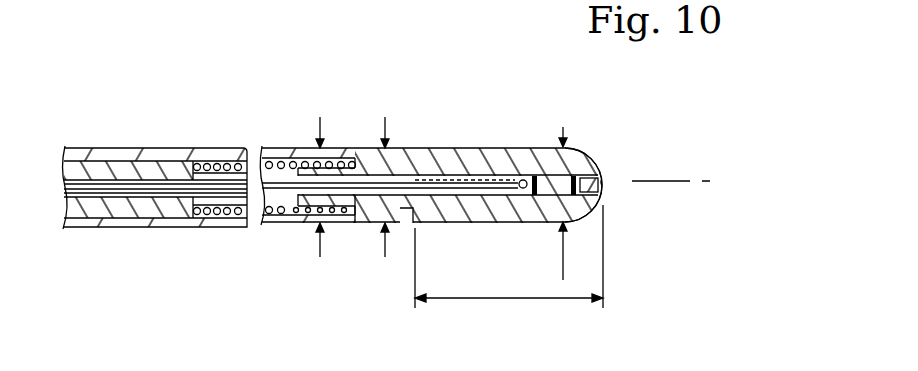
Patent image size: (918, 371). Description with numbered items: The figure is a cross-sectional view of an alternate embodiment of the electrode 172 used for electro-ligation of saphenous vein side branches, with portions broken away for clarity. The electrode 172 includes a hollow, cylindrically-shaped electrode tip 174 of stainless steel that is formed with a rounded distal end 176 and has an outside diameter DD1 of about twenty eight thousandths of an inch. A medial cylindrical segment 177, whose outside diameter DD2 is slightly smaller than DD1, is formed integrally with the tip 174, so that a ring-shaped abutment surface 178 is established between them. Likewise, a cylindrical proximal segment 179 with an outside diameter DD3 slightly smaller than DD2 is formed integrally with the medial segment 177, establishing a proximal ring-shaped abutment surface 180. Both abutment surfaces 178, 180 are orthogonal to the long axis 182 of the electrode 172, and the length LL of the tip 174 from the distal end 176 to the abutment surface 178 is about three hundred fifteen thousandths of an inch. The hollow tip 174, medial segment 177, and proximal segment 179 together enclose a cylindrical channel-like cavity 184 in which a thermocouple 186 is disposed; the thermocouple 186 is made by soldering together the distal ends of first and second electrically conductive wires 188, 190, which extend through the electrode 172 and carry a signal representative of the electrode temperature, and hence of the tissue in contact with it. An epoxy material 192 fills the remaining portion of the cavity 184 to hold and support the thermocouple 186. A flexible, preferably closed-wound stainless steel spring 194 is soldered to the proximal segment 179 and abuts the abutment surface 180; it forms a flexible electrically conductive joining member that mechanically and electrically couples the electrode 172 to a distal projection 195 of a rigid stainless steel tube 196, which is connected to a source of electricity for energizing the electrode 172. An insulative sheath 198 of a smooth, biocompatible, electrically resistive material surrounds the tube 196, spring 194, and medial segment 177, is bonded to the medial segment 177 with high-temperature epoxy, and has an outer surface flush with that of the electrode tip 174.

The electrode 172 is at (368, 70).
The electrode tip 174 is at (489, 147).
The rounded distal end 176 is at (589, 152).
The medial cylindrical segment 177 is at (368, 207).
The ring-shaped abutment surface 178 is at (413, 157).
The cylindrical proximal segment 179 is at (302, 148).
The proximal ring-shaped abutment surface 180 is at (347, 160).
The long axis 182 is at (656, 182).
The cylindrical channel-like cavity 184 is at (543, 174).
The thermocouple 186 is at (523, 190).
The first electrically conductive wire 188 is at (457, 176).
The second electrically conductive wire 190 is at (477, 193).
The epoxy material 192 is at (592, 183).
The flexible spring 194 is at (222, 163).
The distal projection 195 is at (208, 217).
The rigid stainless steel tube 196 is at (108, 168).
The insulative sheath 198 is at (170, 158).
The outside diameter of the tip DD1 is at (563, 258).
The outside diameter of the medial segment DD2 is at (384, 247).
The outside diameter of the proximal segment DD3 is at (319, 247).
The length of the electrode tip LL is at (490, 302).